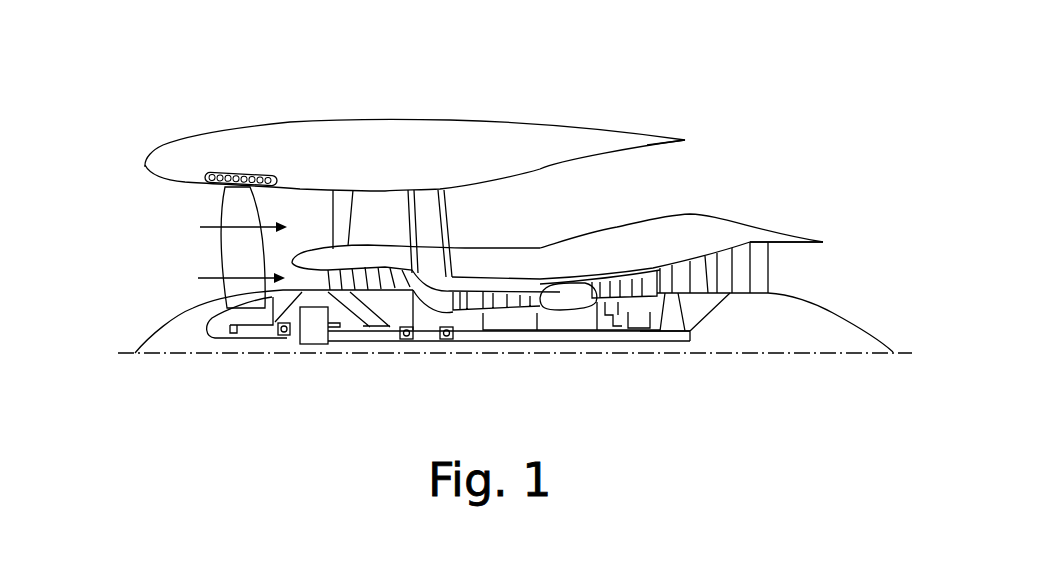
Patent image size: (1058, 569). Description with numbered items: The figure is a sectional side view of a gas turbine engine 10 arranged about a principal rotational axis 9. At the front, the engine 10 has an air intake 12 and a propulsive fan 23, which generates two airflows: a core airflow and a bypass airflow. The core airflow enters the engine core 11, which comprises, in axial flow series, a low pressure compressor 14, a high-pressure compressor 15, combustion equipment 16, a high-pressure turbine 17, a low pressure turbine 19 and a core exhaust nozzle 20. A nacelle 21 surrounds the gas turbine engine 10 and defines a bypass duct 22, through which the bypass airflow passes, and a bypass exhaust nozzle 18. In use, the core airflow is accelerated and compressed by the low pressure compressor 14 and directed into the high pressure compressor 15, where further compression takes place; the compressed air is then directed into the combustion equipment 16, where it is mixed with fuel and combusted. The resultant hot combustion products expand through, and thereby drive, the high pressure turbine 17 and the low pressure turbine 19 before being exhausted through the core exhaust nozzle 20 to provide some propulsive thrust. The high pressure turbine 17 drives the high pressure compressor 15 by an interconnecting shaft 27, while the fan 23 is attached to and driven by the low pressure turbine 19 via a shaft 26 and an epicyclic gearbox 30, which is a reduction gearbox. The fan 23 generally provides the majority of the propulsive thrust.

The principal rotational axis 9 is at (792, 355).
The gas turbine engine 10 is at (198, 132).
The core 11 is at (580, 258).
The air intake 12 is at (150, 200).
The low pressure compressor 14 is at (370, 272).
The high-pressure compressor 15 is at (507, 280).
The combustion equipment 16 is at (567, 298).
The high-pressure turbine 17 is at (625, 283).
The bypass exhaust nozzle 18 is at (786, 134).
The low pressure turbine 19 is at (745, 280).
The core exhaust nozzle 20 is at (834, 278).
The nacelle 21 is at (424, 133).
The bypass duct 22 is at (662, 178).
The propulsive fan 23 is at (230, 263).
The shaft 26 is at (472, 343).
The interconnecting shaft 27 is at (528, 345).
The epicyclic gearbox 30 is at (313, 333).